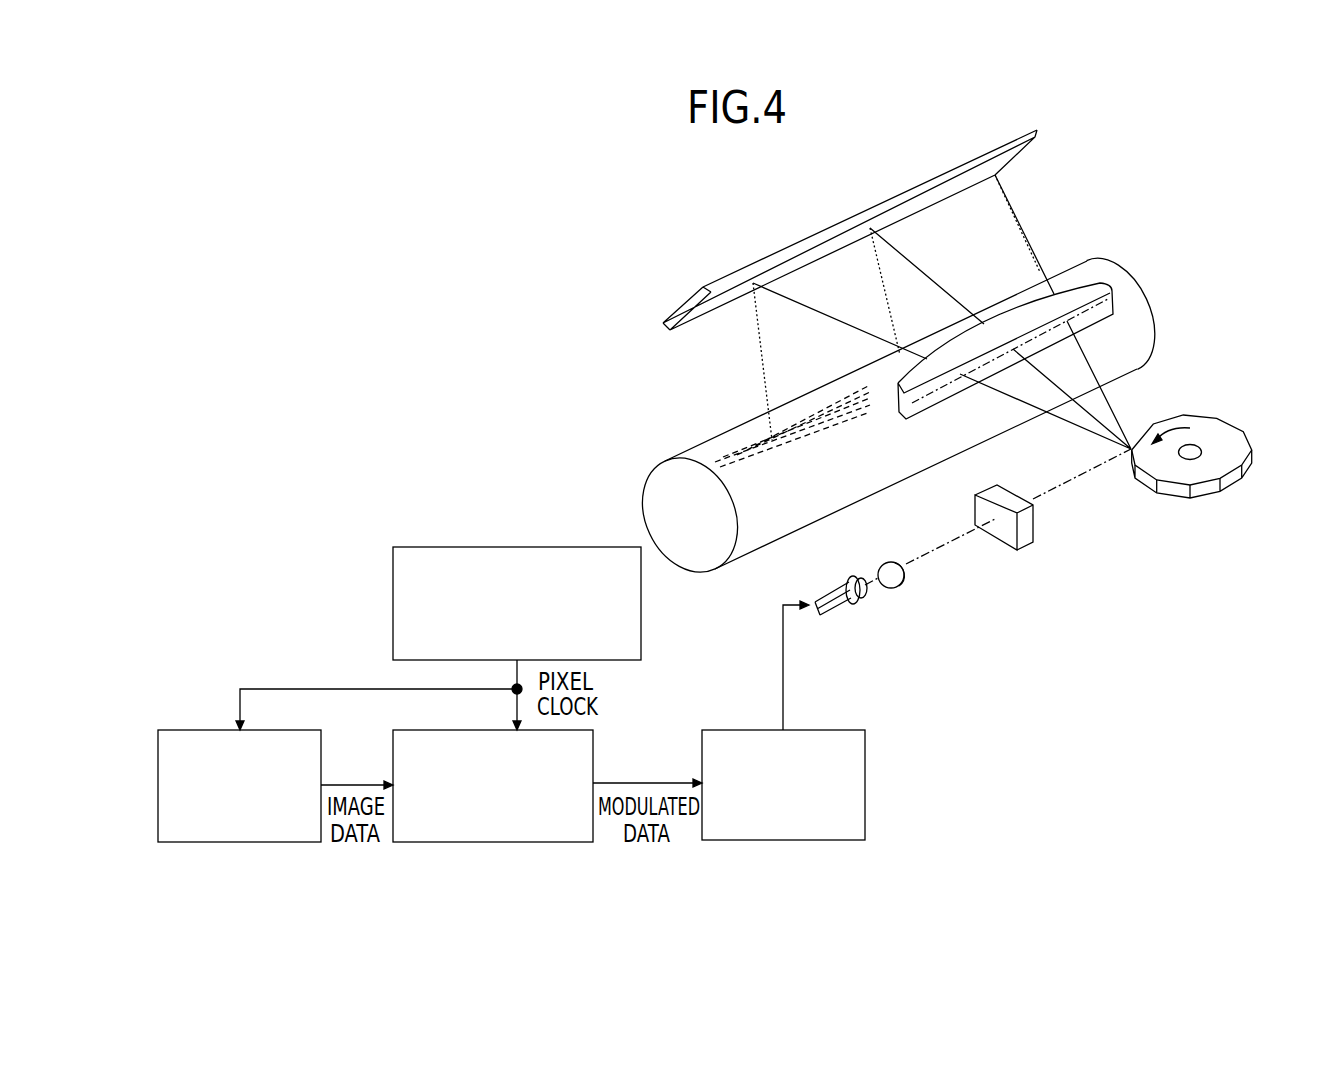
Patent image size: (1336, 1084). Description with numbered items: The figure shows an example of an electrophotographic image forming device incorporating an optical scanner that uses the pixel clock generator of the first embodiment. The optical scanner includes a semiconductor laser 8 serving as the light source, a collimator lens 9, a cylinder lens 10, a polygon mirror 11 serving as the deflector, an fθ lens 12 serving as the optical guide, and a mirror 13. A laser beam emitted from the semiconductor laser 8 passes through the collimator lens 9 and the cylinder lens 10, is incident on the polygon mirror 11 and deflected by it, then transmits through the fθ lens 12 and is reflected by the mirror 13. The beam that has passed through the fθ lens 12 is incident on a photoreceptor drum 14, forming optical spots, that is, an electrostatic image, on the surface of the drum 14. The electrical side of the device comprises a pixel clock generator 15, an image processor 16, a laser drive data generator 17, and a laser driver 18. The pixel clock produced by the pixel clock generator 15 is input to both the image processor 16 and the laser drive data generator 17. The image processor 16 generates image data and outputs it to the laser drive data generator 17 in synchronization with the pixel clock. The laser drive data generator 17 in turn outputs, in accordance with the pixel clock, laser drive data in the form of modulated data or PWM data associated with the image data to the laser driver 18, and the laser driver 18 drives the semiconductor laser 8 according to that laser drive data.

The semiconductor laser 8 is at (858, 607).
The collimator lens 9 is at (903, 585).
The cylinder lens 10 is at (1017, 550).
The polygon mirror 11 is at (1208, 415).
The fθ lens 12 is at (1100, 266).
The mirror 13 is at (827, 224).
The photoreceptor drum 14 is at (1155, 290).
The pixel clock generator 15 is at (420, 545).
The image processor 16 is at (183, 728).
The laser drive data generator 17 is at (595, 743).
The laser driver 18 is at (847, 728).